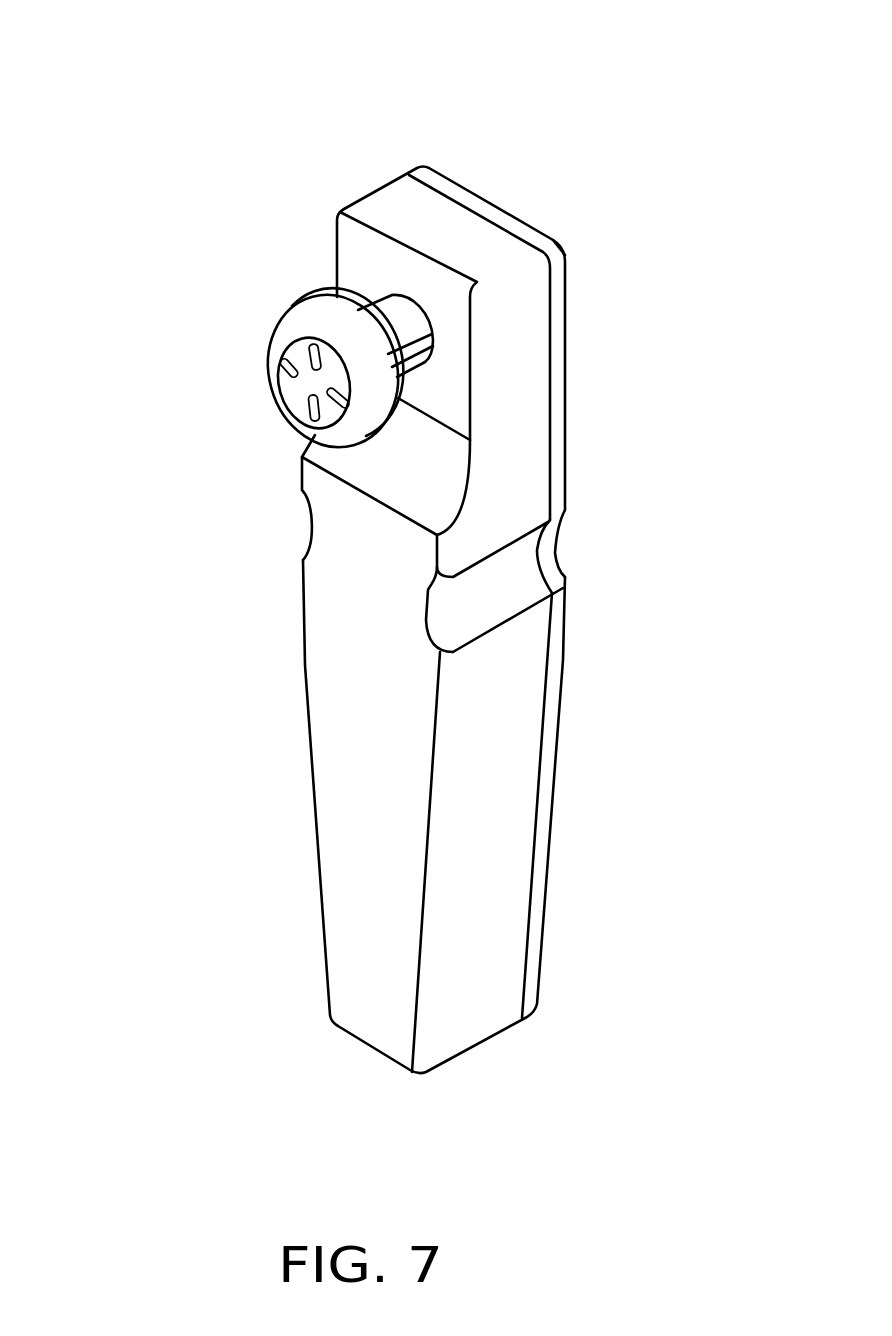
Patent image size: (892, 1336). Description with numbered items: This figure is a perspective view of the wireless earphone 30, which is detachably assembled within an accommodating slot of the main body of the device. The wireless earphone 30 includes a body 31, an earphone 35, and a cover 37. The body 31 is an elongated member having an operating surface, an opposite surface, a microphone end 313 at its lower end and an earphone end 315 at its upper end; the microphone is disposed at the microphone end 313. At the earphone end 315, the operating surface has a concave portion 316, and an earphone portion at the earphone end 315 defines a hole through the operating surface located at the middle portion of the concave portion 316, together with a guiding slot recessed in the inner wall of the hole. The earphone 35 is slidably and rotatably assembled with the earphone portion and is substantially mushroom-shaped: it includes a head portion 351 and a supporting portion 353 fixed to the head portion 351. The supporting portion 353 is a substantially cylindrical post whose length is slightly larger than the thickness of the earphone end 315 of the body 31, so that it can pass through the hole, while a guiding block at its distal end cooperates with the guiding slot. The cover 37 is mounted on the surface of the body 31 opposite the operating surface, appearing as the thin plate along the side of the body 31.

The wireless earphone 30 is at (277, 64).
The body 31 is at (728, 358).
The microphone end 313 is at (500, 703).
The earphone end 315 is at (447, 393).
The concave portion 316 is at (510, 483).
The earphone 35 is at (163, 193).
The head portion 351 is at (302, 317).
The supporting portion 353 is at (400, 308).
The cover 37 is at (558, 290).